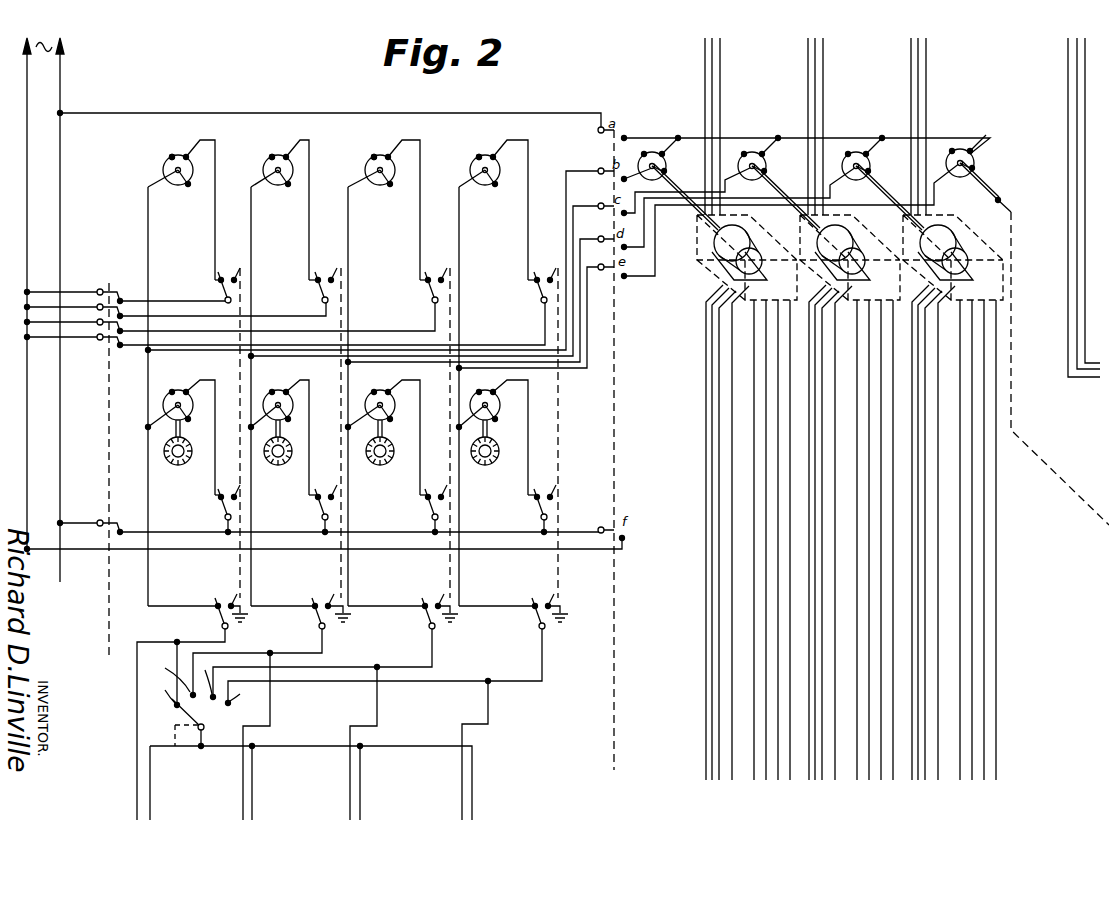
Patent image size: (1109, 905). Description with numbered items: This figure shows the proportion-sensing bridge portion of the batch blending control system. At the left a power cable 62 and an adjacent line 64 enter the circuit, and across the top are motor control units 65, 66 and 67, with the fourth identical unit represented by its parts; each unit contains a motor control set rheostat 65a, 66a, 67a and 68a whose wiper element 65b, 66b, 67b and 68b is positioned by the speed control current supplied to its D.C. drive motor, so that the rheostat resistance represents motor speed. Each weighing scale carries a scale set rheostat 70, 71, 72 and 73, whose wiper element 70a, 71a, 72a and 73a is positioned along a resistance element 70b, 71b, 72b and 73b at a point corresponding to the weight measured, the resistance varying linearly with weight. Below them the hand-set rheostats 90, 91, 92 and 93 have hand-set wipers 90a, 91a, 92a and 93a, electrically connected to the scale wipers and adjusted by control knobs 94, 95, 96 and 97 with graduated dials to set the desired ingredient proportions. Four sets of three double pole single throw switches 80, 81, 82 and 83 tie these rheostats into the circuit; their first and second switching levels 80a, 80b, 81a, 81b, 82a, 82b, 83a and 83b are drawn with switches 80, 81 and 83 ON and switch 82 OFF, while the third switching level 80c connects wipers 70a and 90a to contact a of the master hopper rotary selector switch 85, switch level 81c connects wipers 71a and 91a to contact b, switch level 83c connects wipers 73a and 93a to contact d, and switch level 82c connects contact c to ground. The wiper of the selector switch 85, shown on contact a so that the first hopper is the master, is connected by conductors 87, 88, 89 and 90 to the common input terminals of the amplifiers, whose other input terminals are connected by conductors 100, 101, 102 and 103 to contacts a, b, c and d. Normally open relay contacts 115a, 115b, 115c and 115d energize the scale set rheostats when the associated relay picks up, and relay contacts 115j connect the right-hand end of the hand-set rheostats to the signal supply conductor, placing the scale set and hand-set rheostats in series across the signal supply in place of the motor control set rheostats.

The cable 62 is at (27, 465).
The power supply line 64 is at (60, 412).
The motor control unit 65 is at (697, 260).
The rheostat 65a is at (663, 172).
The wiper element 65b is at (655, 156).
The motor control unit 66 is at (803, 240).
The rheostat 66a is at (764, 172).
The wiper element 66b is at (755, 156).
The motor control unit 67 is at (905, 243).
The rheostat 67a is at (866, 172).
The wiper element 67b is at (859, 156).
The rheostat 68a is at (976, 171).
The wiper element 68b is at (963, 153).
The rheostat 70 is at (162, 166).
The wiper element 70a is at (178, 182).
The resistance element 70b is at (172, 155).
The rheostat 71 is at (262, 166).
The wiper element 71a is at (278, 182).
The resistance element 71b is at (272, 155).
The rheostat 72 is at (364, 166).
The wiper element 72a is at (380, 183).
The resistance element 72b is at (374, 155).
The rheostat 73 is at (469, 166).
The wiper element 73a is at (485, 183).
The resistance element 73b is at (479, 155).
The double pole single throw switch 80 is at (237, 568).
The relay contact 80a is at (219, 278).
The relay contact 80b is at (216, 509).
The third switching level 80c is at (214, 626).
The double pole single throw switch 81 is at (338, 568).
The relay contact 81a is at (316, 285).
The relay contact 81b is at (315, 507).
The switch level 81c is at (320, 629).
The double pole single throw switch 82 is at (448, 566).
The relay contact 82a is at (427, 288).
The relay contact 82b is at (424, 507).
The switch level 82c is at (430, 629).
The double pole single throw switch 83 is at (556, 566).
The relay contact 83a is at (532, 289).
The relay contact 83b is at (533, 507).
The switch level 83c is at (540, 627).
The master hopper rotary selector switch 85 is at (204, 725).
The conductor 87 is at (152, 773).
The conductor 88 is at (253, 771).
The conductor 89 is at (361, 772).
The hand-set rheostat 90 is at (161, 407).
The hand-set wiper 90a is at (188, 393).
The hand-set rheostat 91 is at (265, 399).
The hand-set wiper 91a is at (287, 394).
The hand-set rheostat 92 is at (366, 405).
The hand-set wiper 92a is at (381, 409).
The hand-set rheostat 93 is at (470, 403).
The hand-set wiper 93a is at (489, 409).
The control knob 94 is at (178, 465).
The control knob 95 is at (278, 465).
The control knob 96 is at (380, 465).
The control knob 97 is at (496, 462).
The conductor 100 is at (137, 680).
The conductor 101 is at (270, 716).
The conductor 102 is at (377, 710).
The conductor 103 is at (488, 705).
The relay contacts 115a is at (124, 296).
The relay contacts 115b is at (124, 310).
The relay contacts 115c is at (124, 330).
The relay contacts 115d is at (118, 345).
The relay contacts 115j is at (117, 534).